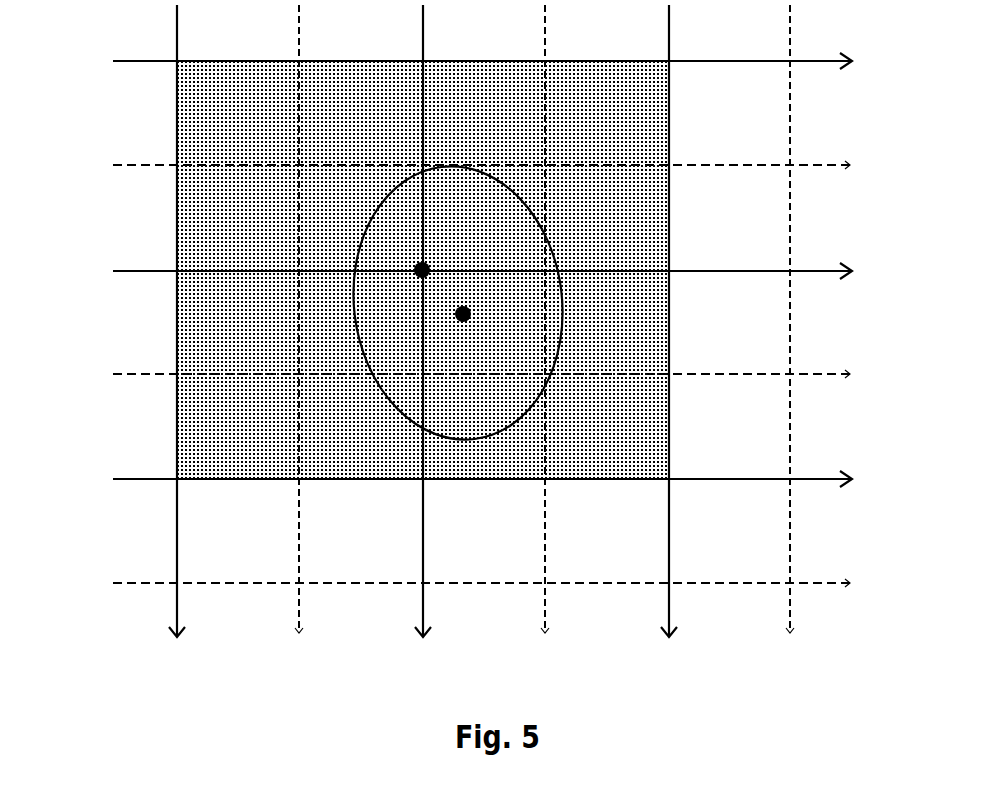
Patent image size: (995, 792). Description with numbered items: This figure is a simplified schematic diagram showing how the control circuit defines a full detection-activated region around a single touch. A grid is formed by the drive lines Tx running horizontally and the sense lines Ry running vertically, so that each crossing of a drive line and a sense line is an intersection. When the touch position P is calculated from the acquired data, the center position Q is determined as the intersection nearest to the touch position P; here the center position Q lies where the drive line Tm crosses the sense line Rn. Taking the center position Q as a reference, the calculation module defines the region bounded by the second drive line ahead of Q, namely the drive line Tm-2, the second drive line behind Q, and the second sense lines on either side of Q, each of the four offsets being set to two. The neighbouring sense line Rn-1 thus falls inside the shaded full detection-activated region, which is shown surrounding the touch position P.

The drive line Tm-2 is at (438, 59).
The drive line Tm is at (439, 269).
The drive lines Tx is at (505, 583).
The sense line Rn-1 is at (309, 341).
The sense line Rn is at (431, 340).
The sense lines Ry is at (790, 340).
The center position Q is at (432, 258).
The touch position P is at (473, 314).